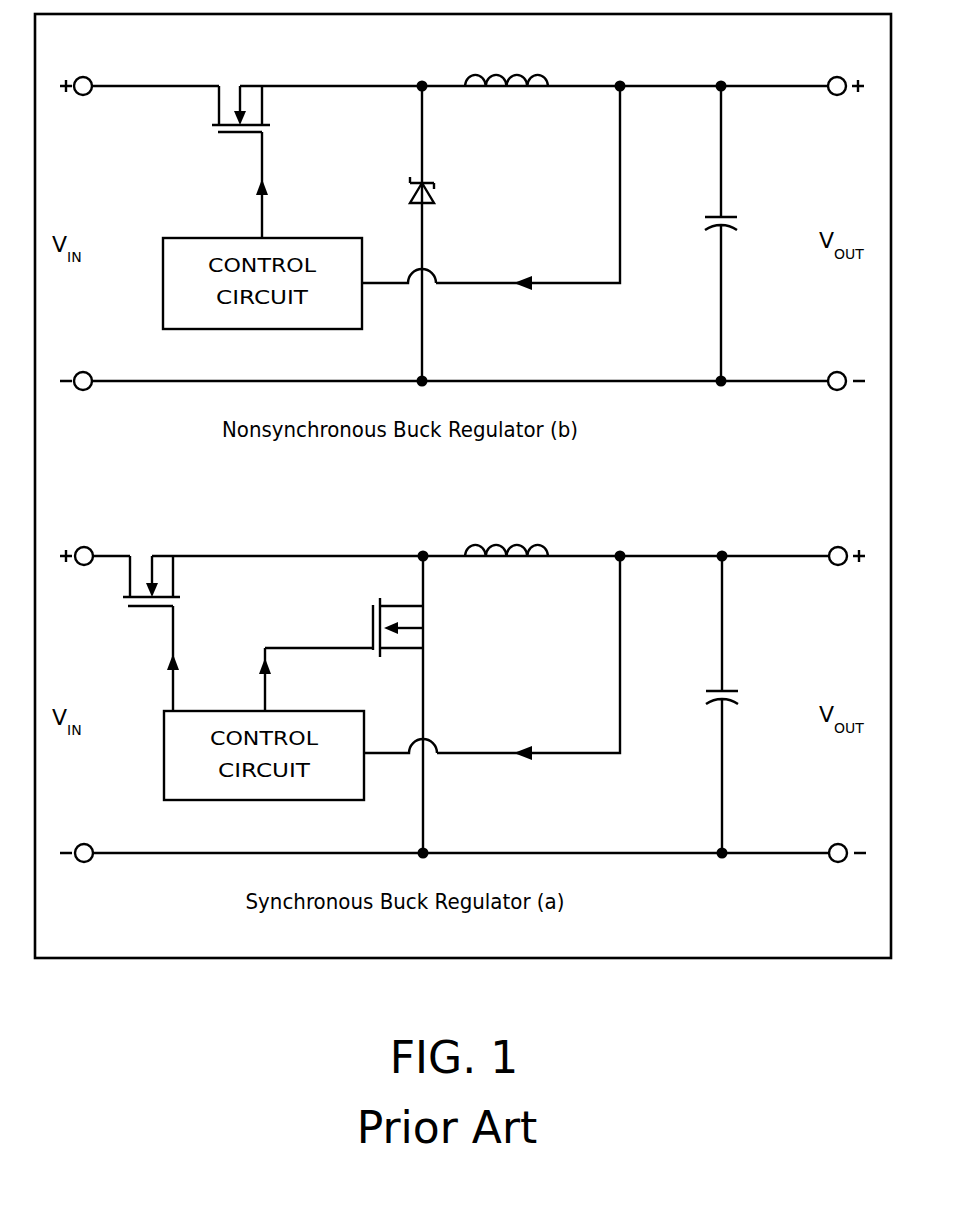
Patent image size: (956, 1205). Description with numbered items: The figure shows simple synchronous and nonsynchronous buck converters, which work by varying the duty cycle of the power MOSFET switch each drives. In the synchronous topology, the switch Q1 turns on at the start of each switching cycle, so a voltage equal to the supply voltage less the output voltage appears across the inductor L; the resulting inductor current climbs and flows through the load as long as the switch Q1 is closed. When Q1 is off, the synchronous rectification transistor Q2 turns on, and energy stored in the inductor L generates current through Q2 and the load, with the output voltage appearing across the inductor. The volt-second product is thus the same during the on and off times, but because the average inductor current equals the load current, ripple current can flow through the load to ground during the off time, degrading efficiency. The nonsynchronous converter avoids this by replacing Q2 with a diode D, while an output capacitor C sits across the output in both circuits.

The switch Q1 is at (196, 384).
The synchronous rectification transistor Q2 is at (341, 653).
The inductor L is at (506, 300).
The diode D is at (436, 191).
The output capacitor C is at (737, 469).